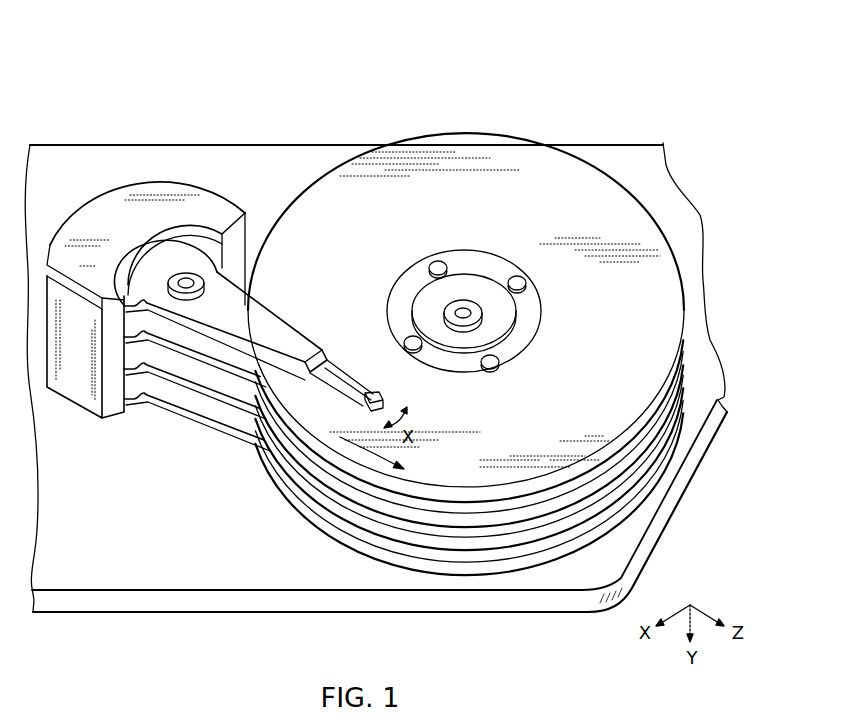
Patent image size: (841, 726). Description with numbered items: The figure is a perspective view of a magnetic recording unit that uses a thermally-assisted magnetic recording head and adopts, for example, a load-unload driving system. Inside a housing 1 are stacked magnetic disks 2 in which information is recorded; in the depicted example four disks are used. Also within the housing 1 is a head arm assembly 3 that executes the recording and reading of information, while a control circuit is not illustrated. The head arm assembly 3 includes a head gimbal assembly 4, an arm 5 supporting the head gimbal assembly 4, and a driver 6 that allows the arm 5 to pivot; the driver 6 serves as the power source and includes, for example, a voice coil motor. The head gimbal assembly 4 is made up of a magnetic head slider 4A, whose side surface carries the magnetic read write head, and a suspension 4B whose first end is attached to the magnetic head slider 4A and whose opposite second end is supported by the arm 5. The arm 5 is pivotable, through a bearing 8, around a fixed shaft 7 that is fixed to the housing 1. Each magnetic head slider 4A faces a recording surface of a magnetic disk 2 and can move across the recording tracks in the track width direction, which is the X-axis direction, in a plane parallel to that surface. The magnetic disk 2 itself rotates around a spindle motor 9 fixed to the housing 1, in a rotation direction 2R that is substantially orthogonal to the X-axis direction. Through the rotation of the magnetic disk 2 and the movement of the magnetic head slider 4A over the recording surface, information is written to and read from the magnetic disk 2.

The housing 1 is at (615, 158).
The magnetic disk 2 is at (630, 290).
The rotation direction 2R is at (340, 455).
The head arm assembly 3 is at (52, 49).
The head gimbal assembly 4 is at (378, 86).
The magnetic head slider 4A is at (373, 392).
The suspension 4B is at (343, 380).
The arm 5 is at (277, 335).
The driver 6 is at (109, 188).
The fixed shaft 7 is at (191, 268).
The bearing 8 is at (184, 278).
The spindle motor 9 is at (463, 322).